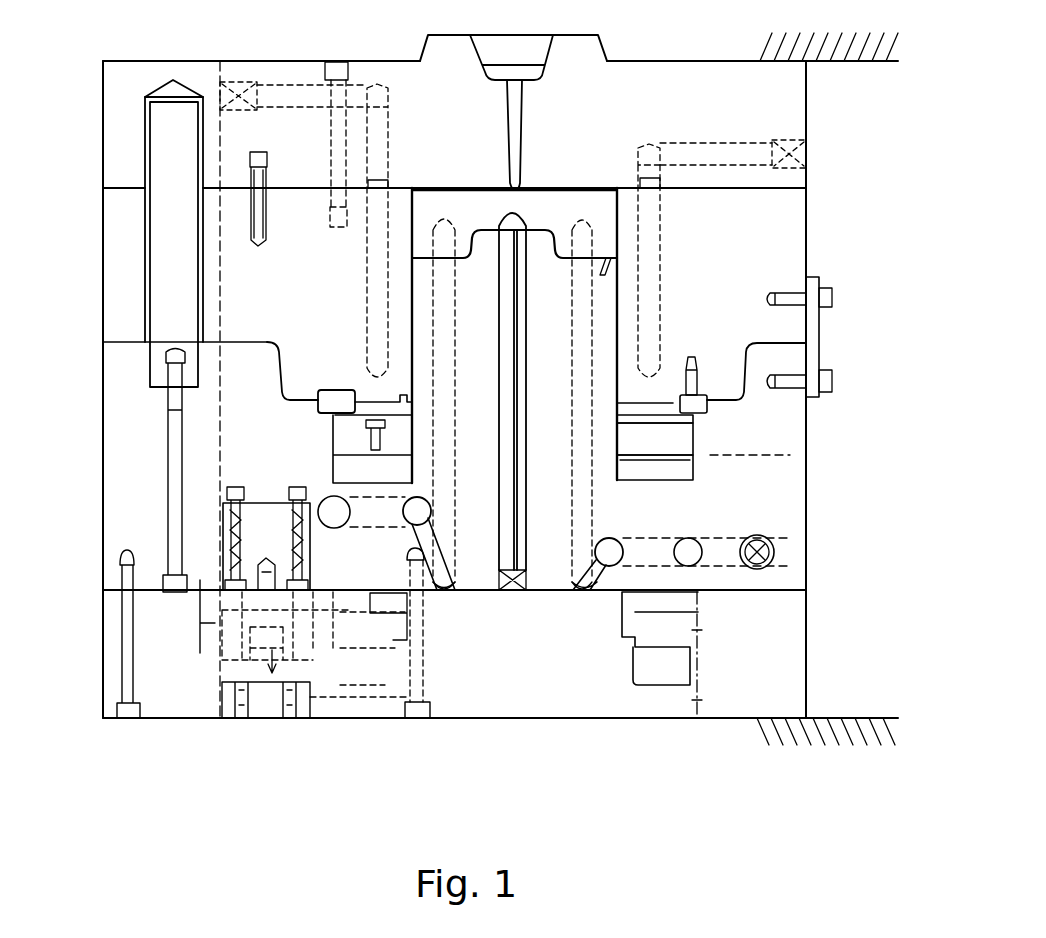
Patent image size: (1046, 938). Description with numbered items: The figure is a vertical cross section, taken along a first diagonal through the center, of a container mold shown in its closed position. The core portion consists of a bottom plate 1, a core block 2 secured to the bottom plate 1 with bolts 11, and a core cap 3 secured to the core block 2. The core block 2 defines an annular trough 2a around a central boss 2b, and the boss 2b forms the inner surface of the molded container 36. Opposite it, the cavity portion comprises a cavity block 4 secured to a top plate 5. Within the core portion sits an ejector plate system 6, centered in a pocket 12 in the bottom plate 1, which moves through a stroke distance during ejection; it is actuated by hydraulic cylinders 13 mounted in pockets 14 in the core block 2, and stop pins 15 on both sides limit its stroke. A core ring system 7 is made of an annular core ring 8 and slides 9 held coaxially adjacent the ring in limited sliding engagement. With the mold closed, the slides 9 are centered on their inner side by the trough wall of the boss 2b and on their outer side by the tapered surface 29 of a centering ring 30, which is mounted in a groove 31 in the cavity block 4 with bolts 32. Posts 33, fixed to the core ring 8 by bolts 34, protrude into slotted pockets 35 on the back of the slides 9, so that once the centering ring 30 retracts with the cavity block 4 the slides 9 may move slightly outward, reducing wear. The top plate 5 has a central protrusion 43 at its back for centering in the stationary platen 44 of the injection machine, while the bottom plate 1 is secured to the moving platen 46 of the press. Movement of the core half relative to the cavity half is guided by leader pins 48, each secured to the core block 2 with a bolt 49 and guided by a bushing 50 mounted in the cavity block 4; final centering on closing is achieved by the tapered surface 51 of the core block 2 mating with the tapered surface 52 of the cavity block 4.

The bottom plate 1 is at (530, 673).
The core block 2 is at (550, 552).
The annular trough 2a is at (658, 477).
The central boss 2b is at (563, 451).
The core cap 3 is at (602, 215).
The cavity block 4 is at (771, 246).
The top plate 5 is at (287, 135).
The ejector plate system 6 is at (347, 628).
The core ring system 7 is at (888, 487).
The core ring 8 is at (657, 445).
The slides 9 is at (647, 415).
The bolts 11 is at (122, 712).
The pocket 12 is at (650, 677).
The hydraulic cylinders 13 is at (277, 525).
The pockets 14 is at (310, 577).
The stop pins 15 is at (280, 687).
The tapered surface 29 is at (322, 400).
The centering ring 30 is at (345, 392).
The groove 31 is at (707, 390).
The bolts 32 is at (707, 413).
The posts 33 is at (350, 432).
The bolts 34 is at (211, 447).
The slotted pockets 35 is at (367, 422).
The molded container 36 is at (408, 343).
The central protrusion 43 is at (420, 58).
The stationary platen 44 is at (823, 61).
The moving platen 46 is at (826, 718).
The leader pins 48 is at (165, 247).
The bolt 49 is at (170, 592).
The bushing 50 is at (148, 217).
The tapered surface 51 is at (747, 393).
The tapered surface 52 is at (862, 360).